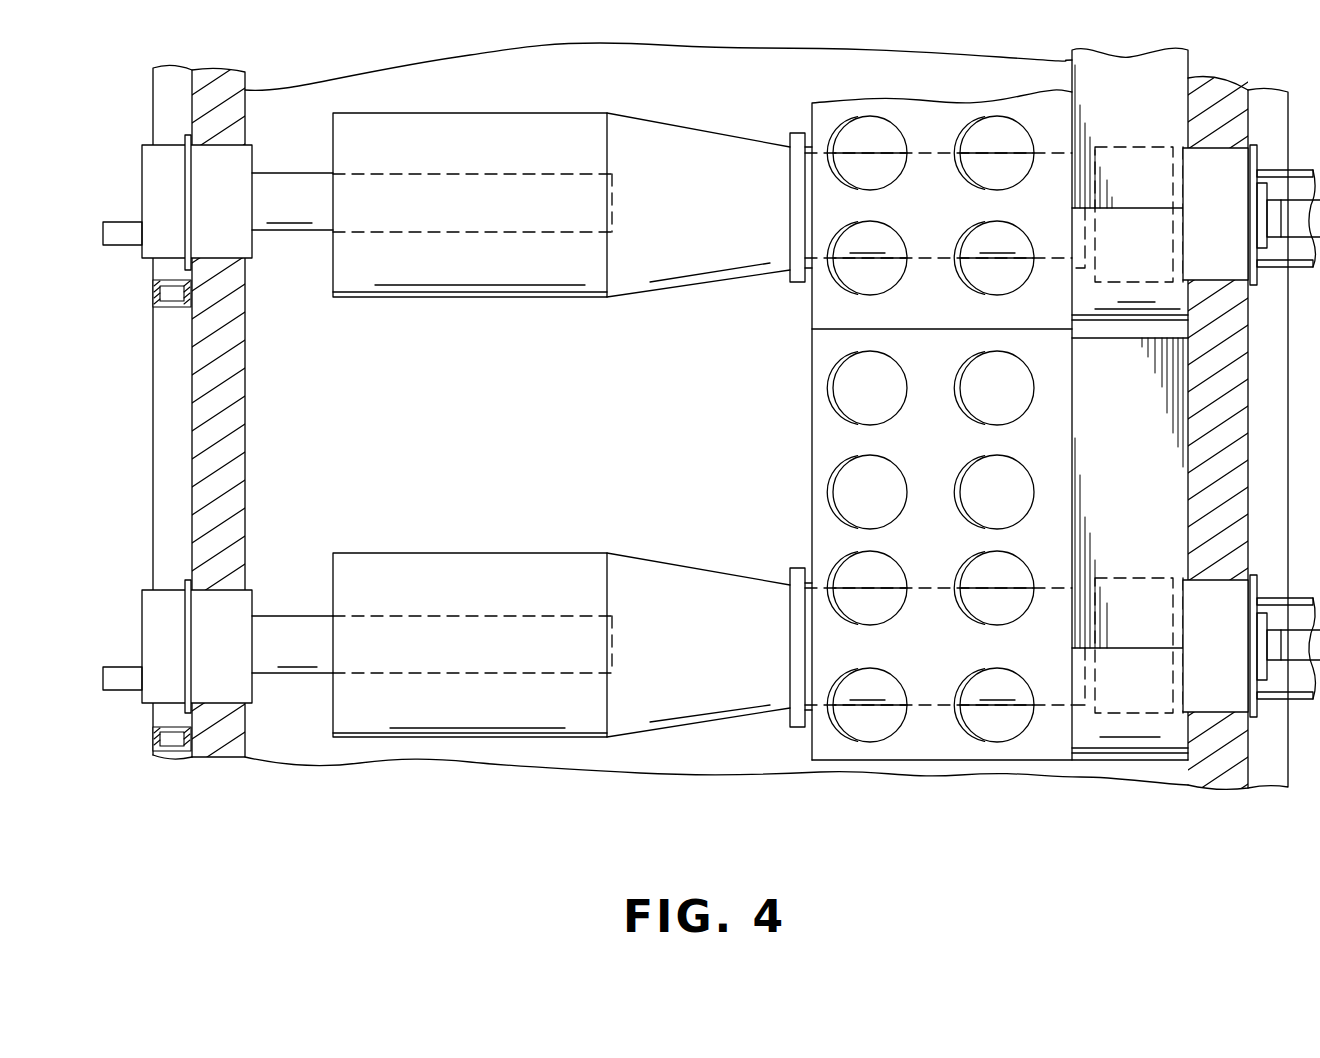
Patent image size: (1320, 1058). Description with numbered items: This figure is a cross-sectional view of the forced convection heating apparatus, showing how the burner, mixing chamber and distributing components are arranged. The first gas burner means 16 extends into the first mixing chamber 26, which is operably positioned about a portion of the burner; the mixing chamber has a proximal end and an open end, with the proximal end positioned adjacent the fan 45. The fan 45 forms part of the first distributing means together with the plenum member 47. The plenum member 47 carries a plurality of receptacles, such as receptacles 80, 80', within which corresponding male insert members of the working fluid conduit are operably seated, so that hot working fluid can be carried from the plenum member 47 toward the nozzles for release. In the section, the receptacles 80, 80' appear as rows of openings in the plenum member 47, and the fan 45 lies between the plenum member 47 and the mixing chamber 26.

The first gas burner means 16 is at (295, 676).
The first mixing chamber 26 is at (495, 722).
The receptacle 80 is at (867, 472).
The receptacle 80' is at (994, 472).
The plenum member 47 is at (1040, 748).
The fan 45 is at (1135, 705).